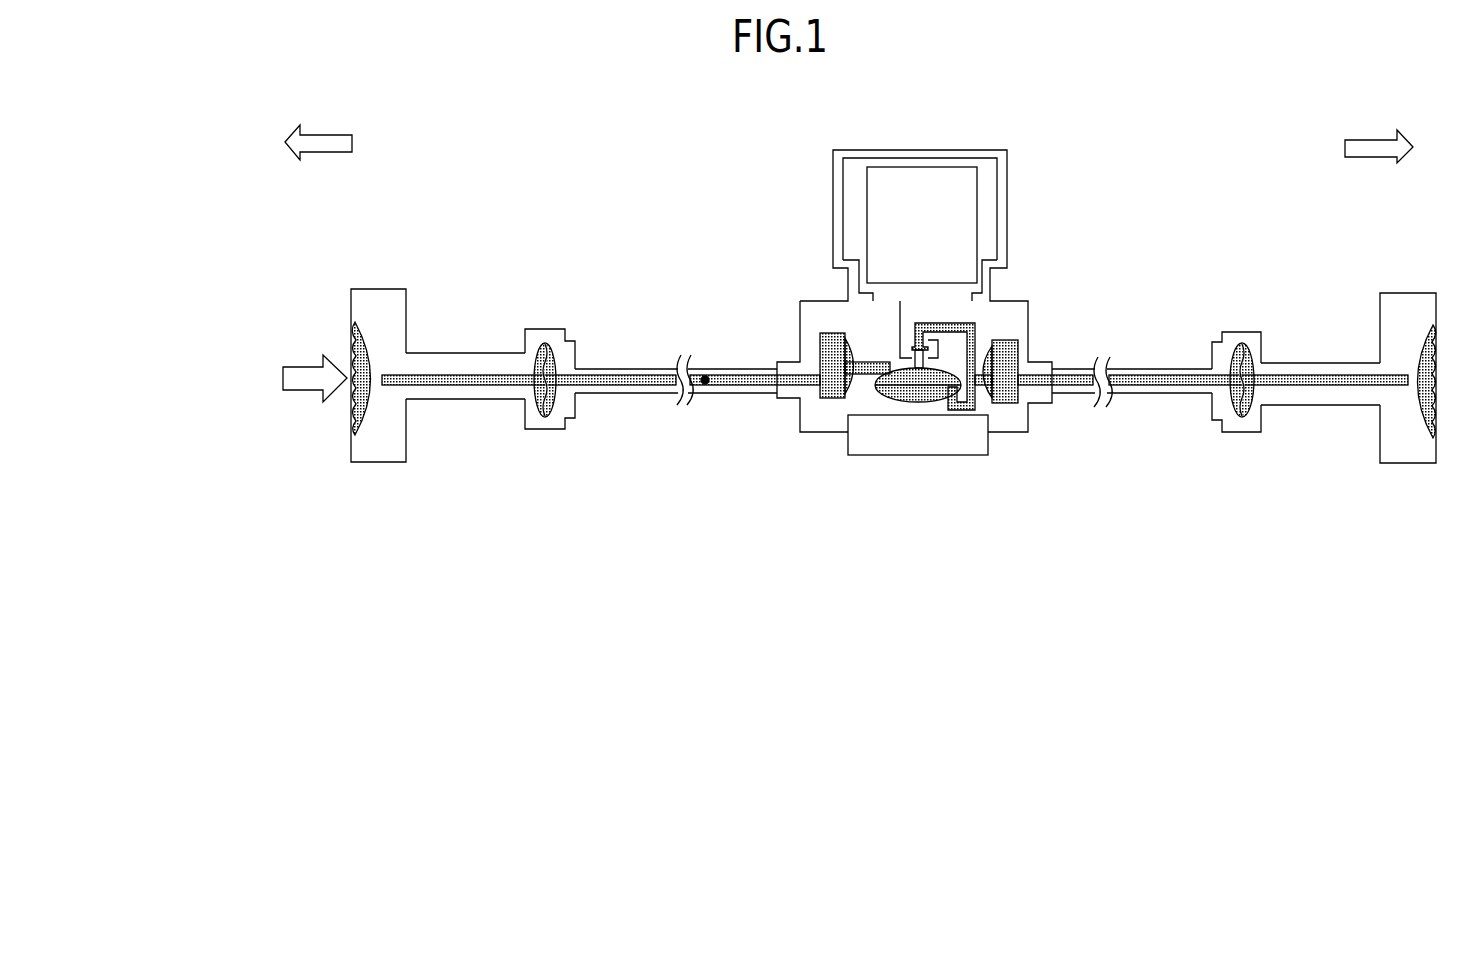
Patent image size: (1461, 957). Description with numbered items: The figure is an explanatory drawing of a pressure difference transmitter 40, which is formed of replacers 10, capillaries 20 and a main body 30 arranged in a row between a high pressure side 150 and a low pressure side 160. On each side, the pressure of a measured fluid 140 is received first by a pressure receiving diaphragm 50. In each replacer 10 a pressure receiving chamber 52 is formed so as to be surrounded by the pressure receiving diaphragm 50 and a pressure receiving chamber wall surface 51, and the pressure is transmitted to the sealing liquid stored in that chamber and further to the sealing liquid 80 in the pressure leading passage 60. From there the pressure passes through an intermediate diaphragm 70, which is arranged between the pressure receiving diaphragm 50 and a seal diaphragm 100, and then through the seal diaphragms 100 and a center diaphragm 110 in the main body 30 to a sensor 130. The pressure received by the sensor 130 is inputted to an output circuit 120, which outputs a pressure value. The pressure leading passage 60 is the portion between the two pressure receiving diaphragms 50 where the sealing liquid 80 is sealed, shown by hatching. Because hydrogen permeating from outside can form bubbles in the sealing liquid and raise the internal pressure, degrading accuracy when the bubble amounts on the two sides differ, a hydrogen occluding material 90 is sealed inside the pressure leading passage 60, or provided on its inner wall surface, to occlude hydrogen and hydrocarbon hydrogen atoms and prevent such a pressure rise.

The replacer 10 is at (1434, 492).
The capillary 20 is at (1235, 492).
The main body 30 is at (1032, 492).
The pressure difference transmitter 40 is at (792, 374).
The pressure receiving diaphragm 50 is at (1425, 338).
The pressure receiving chamber wall surface 51 is at (893, 441).
The pressure receiving chamber 52 is at (1400, 353).
The pressure leading passage 60 is at (462, 396).
The intermediate diaphragm 70 is at (545, 345).
The sealing liquid 80 is at (603, 376).
The hydrogen occluding material 90 is at (705, 378).
The seal diaphragm 100 is at (848, 335).
The center diaphragm 110 is at (970, 342).
The output circuit 120 is at (922, 225).
The sensor 130 is at (920, 327).
The measured fluid 140 is at (227, 378).
The high pressure side 150 is at (318, 127).
The low pressure side 160 is at (1362, 131).